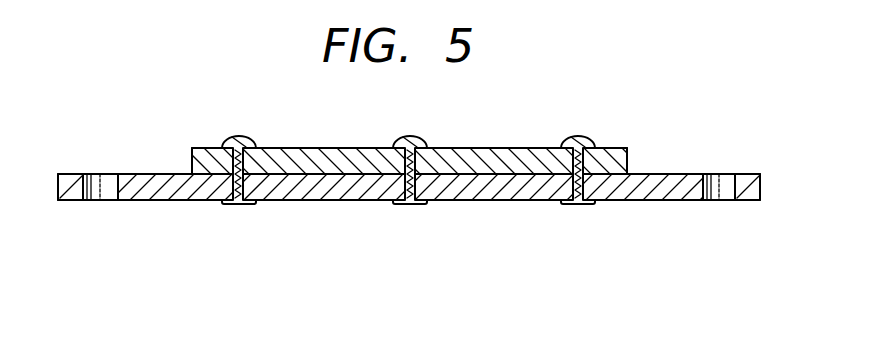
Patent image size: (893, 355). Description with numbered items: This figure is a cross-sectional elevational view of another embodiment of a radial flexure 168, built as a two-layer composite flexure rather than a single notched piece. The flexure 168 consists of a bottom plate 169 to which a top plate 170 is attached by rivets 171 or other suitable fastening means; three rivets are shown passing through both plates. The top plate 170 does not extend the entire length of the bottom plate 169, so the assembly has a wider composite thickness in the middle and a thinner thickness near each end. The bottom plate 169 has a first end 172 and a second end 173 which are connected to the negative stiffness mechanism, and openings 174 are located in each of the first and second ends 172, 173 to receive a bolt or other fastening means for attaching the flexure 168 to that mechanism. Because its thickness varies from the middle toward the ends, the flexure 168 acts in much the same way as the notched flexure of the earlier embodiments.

The radial flexure 168 is at (487, 148).
The bottom plate 169 is at (640, 200).
The top plate 170 is at (350, 148).
The rivets 171 is at (237, 137).
The first end 172 is at (760, 200).
The second end 173 is at (58, 200).
The openings 174 is at (110, 185).